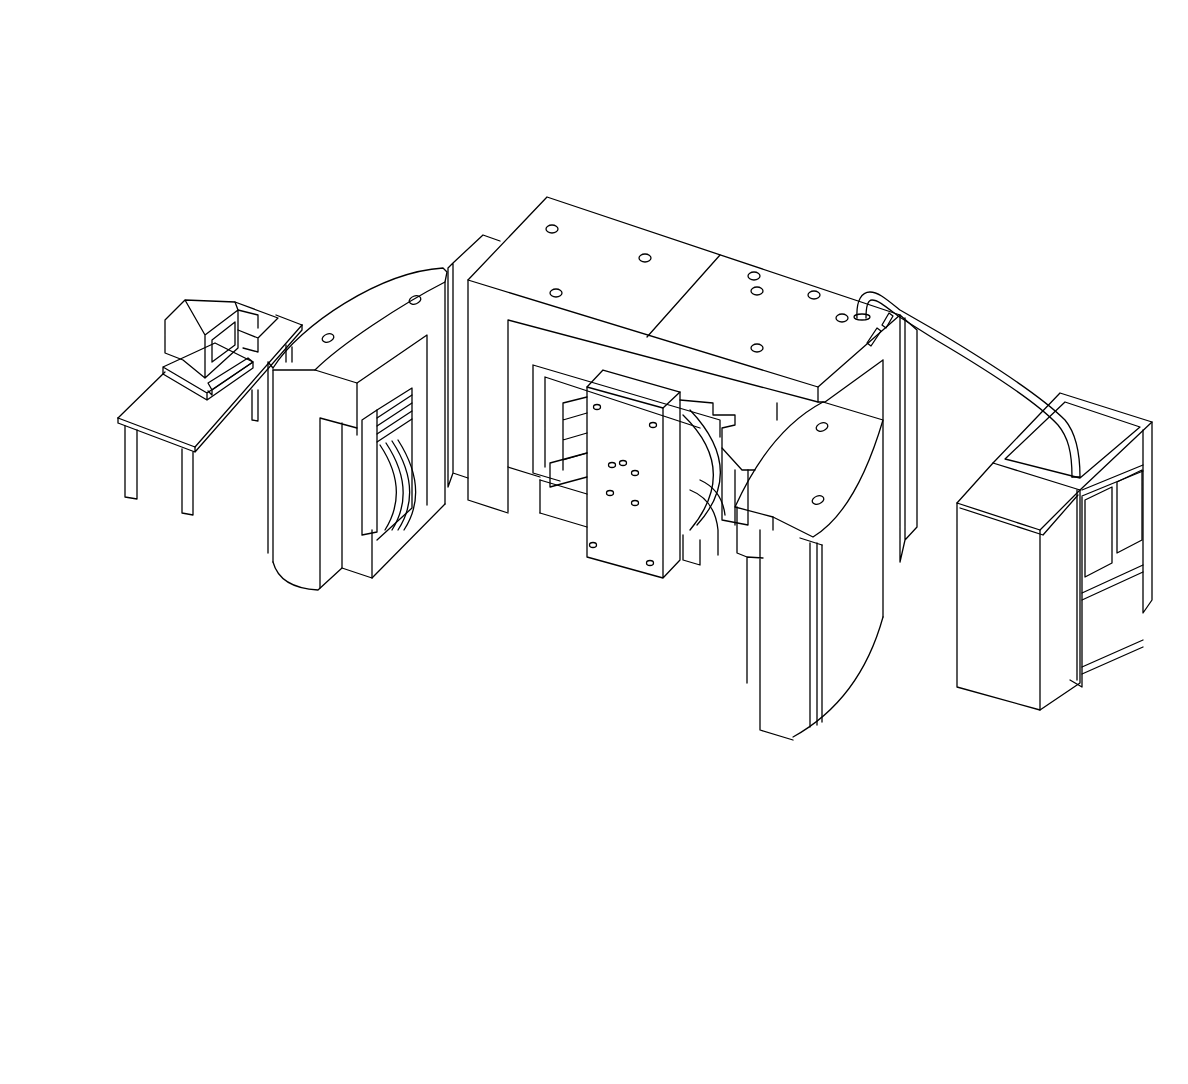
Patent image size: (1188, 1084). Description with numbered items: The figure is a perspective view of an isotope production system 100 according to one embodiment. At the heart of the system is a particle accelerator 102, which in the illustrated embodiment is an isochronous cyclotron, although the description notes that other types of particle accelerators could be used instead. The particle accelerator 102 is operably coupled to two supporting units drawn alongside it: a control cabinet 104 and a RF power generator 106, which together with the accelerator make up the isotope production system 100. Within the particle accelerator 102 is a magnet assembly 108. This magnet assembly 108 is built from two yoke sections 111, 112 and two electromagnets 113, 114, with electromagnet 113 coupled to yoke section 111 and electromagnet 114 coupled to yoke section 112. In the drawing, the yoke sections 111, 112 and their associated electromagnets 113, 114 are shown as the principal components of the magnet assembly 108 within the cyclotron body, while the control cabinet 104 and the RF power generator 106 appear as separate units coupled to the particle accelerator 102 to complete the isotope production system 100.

The isotope production system 100 is at (958, 163).
The particle accelerator 102 is at (576, 547).
The control cabinet 104 is at (1000, 690).
The RF power generator 106 is at (1120, 430).
The magnet assembly 108 is at (566, 540).
The yoke section 111 is at (620, 413).
The yoke section 112 is at (703, 523).
The electromagnet 113 is at (688, 520).
The electromagnet 114 is at (695, 437).